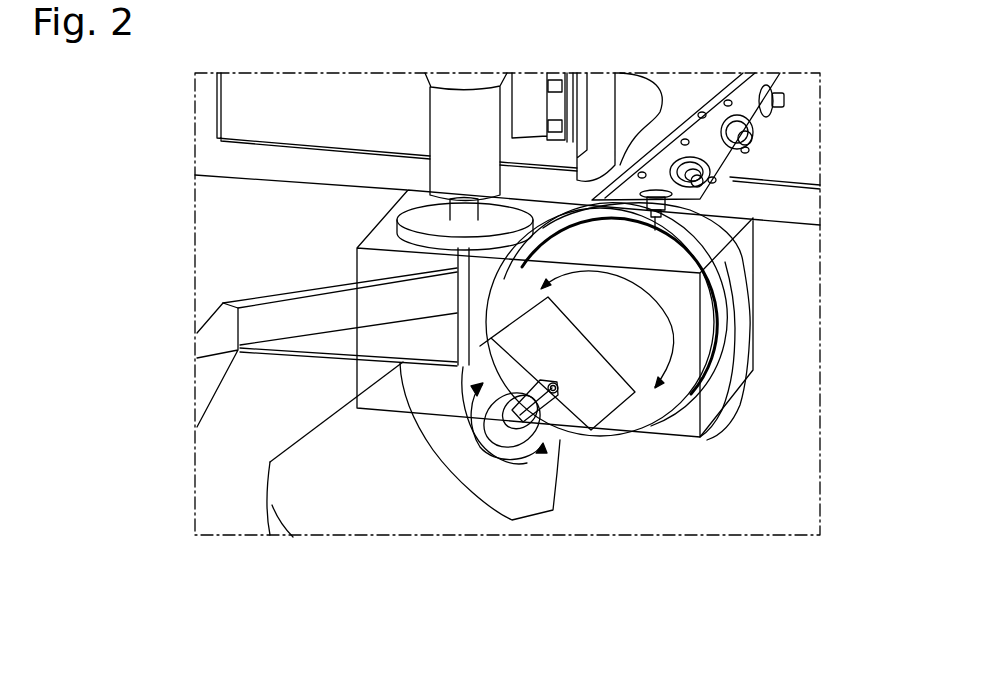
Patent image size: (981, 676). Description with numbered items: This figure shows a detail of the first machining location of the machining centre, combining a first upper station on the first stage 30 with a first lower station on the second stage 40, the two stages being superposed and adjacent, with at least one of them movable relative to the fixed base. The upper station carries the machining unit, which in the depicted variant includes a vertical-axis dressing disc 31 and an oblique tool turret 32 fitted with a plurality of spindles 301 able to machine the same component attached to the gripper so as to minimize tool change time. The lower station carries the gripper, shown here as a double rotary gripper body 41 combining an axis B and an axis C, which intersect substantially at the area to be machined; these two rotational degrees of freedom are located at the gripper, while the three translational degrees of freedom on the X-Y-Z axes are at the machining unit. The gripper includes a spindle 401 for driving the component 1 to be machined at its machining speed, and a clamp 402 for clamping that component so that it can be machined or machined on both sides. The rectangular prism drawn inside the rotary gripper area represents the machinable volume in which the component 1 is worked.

The workpiece 1 is at (557, 395).
The first stage 30 is at (156, 117).
The rotary spindle unit 31 is at (400, 210).
The tool head 32 is at (727, 160).
The spindle 301 is at (750, 137).
The second stage 40 is at (300, 390).
The holder body 41 is at (352, 492).
The spindle 401 is at (517, 435).
The clamp 402 is at (552, 430).
The axis B is at (672, 345).
The axis C is at (493, 445).